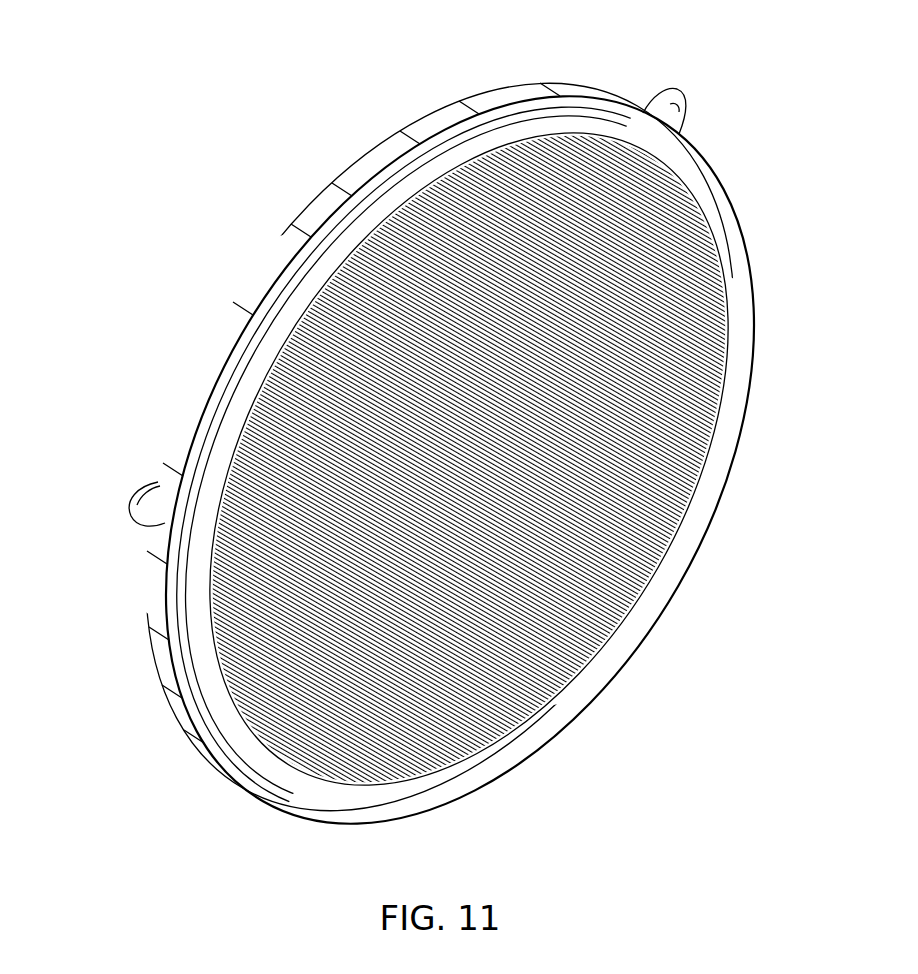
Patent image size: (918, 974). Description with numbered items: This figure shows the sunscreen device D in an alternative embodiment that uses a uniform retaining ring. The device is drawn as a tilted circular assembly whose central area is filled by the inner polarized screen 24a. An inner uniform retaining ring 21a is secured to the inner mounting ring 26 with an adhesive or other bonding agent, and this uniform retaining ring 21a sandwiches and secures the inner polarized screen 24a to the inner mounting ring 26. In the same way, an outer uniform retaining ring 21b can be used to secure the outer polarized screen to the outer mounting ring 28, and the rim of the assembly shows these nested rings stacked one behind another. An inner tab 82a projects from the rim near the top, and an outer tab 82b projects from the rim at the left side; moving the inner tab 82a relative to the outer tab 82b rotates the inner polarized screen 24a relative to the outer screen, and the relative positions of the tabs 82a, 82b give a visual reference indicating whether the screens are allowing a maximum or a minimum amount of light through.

The inner uniform retaining ring 21a is at (683, 562).
The outer uniform retaining ring 21b is at (283, 240).
The inner polarized screen 24a is at (600, 637).
The inner mounting ring 26 is at (442, 133).
The outer mounting ring 28 is at (392, 152).
The inner tab 82a is at (672, 108).
The outer tab 82b is at (148, 500).
The sunscreen device D is at (205, 160).